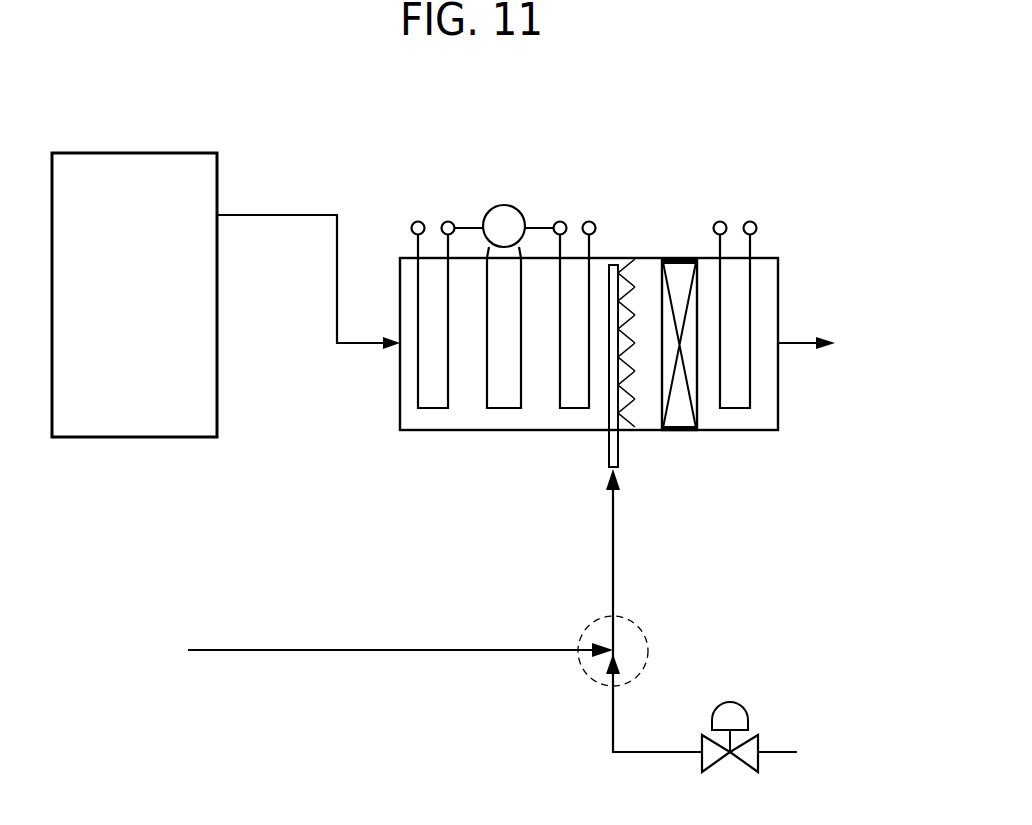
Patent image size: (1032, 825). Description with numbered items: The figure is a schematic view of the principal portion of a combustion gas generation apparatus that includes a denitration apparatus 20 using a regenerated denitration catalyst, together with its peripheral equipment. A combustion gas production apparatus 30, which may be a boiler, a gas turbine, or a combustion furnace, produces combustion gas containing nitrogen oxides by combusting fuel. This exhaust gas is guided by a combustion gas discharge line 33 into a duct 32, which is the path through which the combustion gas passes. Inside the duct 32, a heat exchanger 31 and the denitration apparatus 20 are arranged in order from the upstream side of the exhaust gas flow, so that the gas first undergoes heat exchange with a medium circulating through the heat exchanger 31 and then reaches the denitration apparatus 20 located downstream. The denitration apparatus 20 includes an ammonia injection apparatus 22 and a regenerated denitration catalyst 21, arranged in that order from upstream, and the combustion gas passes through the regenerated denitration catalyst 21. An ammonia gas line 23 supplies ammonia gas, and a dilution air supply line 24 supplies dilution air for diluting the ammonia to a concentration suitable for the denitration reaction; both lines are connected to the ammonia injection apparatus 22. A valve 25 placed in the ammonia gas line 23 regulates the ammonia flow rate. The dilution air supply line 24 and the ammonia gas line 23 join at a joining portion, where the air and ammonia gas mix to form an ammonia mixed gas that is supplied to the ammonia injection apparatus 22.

The denitration apparatus 20 is at (684, 513).
The regenerated denitration catalyst 21 is at (676, 257).
The ammonia injection apparatus 22 is at (607, 454).
The ammonia gas line 23 is at (667, 752).
The dilution air supply line 24 is at (395, 650).
The valve 25 is at (730, 703).
The combustion gas production apparatus 30 is at (131, 440).
The heat exchanger 31 is at (549, 201).
The duct 32 is at (741, 440).
The combustion gas discharge line 33 is at (262, 213).